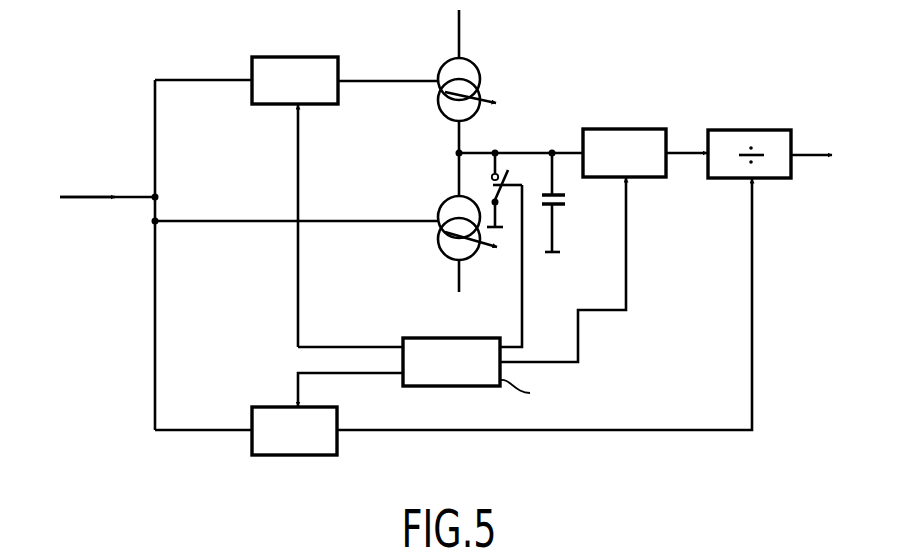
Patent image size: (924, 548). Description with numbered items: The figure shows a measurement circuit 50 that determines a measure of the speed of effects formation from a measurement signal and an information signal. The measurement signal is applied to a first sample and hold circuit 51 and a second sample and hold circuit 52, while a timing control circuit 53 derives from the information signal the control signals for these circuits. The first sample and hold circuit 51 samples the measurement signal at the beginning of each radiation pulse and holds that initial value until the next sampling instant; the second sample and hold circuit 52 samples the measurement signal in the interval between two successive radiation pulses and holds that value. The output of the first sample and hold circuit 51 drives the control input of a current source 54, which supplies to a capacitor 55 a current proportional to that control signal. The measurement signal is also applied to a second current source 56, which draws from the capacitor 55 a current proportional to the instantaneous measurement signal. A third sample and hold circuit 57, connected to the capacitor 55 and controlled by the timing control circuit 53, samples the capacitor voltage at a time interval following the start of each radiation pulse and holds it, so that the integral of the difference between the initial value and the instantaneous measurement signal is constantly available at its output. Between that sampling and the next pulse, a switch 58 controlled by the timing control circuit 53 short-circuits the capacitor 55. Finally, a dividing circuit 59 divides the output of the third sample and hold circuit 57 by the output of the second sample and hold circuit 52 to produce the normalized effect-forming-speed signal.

The measurement circuit 50 is at (454, 232).
The first sample and hold circuit 51 is at (295, 62).
The second sample and hold circuit 52 is at (328, 418).
The timing control circuit 53 is at (473, 378).
The current source 54 is at (475, 66).
The capacitor 55 is at (558, 207).
The second current source 56 is at (466, 248).
The third sample and hold circuit 57 is at (638, 140).
The switch 58 is at (494, 190).
The dividing circuit 59 is at (748, 140).